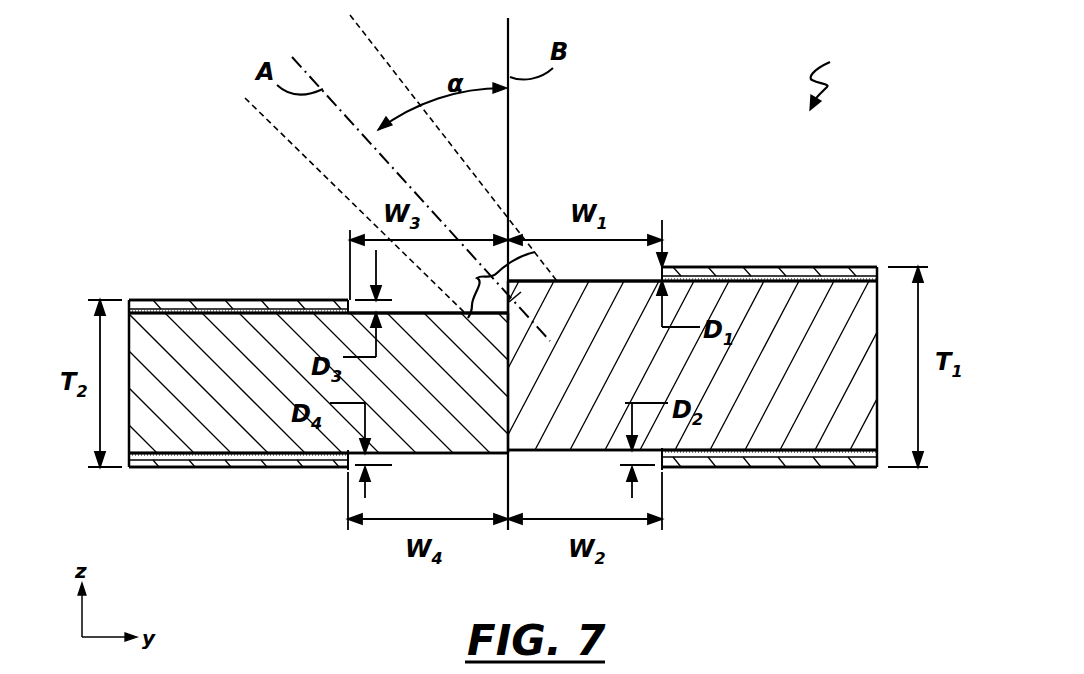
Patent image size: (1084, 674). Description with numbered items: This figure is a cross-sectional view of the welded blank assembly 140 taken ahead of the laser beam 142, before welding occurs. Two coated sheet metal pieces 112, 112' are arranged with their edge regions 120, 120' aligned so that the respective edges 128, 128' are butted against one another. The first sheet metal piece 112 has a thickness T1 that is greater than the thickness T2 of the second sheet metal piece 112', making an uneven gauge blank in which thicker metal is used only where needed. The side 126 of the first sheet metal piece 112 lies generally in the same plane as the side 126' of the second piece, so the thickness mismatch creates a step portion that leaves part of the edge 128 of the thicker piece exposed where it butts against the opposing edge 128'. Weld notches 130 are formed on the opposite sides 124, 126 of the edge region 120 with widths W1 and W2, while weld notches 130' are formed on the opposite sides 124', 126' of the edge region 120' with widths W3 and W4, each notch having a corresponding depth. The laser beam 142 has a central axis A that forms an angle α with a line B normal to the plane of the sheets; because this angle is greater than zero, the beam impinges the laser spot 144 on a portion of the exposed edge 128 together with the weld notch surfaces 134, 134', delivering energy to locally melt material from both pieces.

The first sheet metal piece 112 is at (702, 326).
The second sheet metal piece 112' is at (316, 344).
The edge region 120 is at (731, 482).
The edge region 120' is at (276, 480).
The side 124 is at (769, 243).
The side 124' is at (238, 274).
The side 126 is at (782, 483).
The side 126' is at (229, 482).
The edge 128 is at (559, 389).
The edge 128' is at (496, 409).
The weld notch 130 is at (684, 363).
The weld notch 130' is at (327, 382).
The weld notch surface 134 is at (597, 223).
The weld notch surface 134' is at (384, 262).
The welded blank assembly 140 is at (840, 70).
The laser beam 142 is at (410, 88).
The laser spot 144 is at (481, 284).